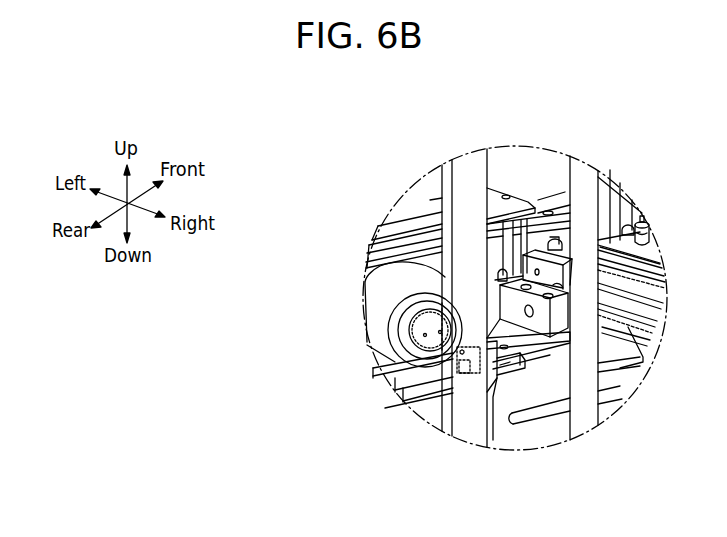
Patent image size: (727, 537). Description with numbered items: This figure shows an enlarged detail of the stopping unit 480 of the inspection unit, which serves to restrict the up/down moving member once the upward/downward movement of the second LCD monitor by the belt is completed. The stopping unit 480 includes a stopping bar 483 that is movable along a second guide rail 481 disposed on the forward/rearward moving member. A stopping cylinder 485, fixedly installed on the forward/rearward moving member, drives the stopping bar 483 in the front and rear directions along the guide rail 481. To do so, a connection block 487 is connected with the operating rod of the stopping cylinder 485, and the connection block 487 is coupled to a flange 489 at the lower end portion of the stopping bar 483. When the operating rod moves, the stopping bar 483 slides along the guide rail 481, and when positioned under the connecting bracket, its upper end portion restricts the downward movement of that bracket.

The stopping unit 480 is at (523, 187).
The second guide rail 481 is at (540, 335).
The stopping bar 483 is at (447, 213).
The stopping cylinder 485 is at (608, 247).
The connection block 487 is at (555, 317).
The flange 489 is at (520, 337).